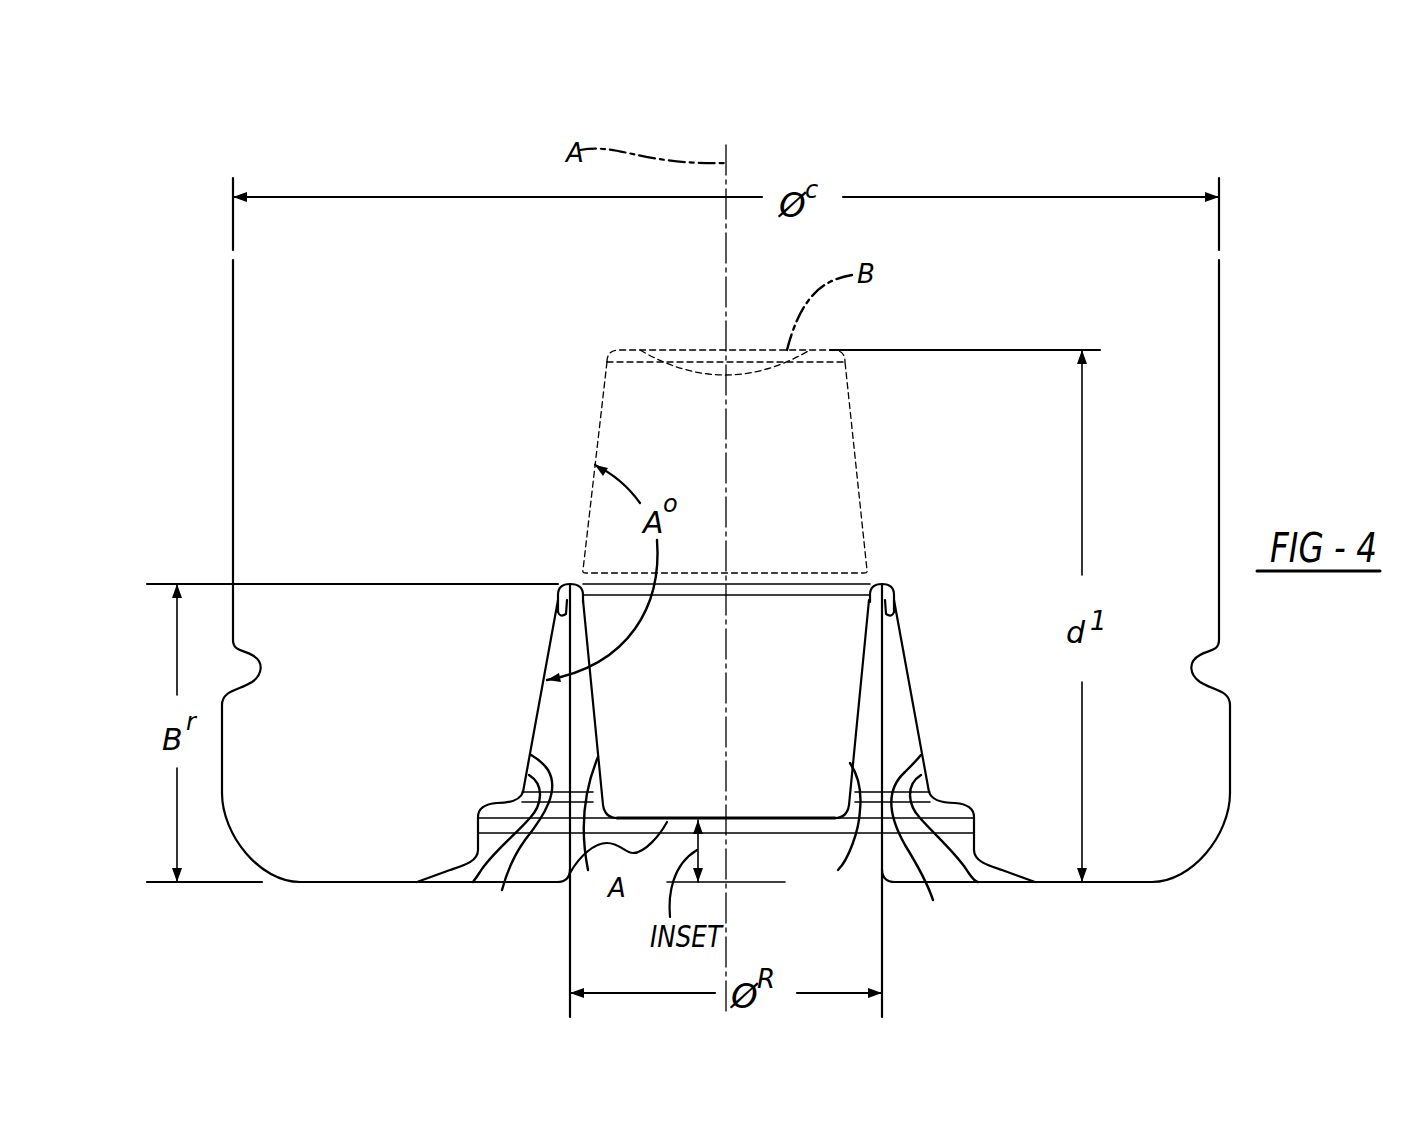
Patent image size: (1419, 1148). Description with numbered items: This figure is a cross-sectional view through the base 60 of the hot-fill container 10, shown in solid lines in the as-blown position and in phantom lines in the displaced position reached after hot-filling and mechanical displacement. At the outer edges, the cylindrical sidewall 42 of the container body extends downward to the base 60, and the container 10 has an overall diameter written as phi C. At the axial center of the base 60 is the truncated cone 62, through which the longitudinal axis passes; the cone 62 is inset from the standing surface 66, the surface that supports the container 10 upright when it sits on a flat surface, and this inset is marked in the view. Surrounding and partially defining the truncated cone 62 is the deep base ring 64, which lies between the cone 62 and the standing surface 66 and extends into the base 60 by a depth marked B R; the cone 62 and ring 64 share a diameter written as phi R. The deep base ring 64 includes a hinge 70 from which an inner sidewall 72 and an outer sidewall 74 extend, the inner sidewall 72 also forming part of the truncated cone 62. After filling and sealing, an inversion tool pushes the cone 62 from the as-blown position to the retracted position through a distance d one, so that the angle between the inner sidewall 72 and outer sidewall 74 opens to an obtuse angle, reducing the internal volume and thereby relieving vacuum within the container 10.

The container 10 is at (676, 448).
The cylindrical sidewall 42 is at (233, 445).
The base 60 is at (397, 905).
The truncated cone 62 is at (785, 822).
The deep base ring 64 is at (473, 882).
The standing surface 66 is at (338, 882).
The hinge 70 is at (556, 611).
The inner sidewall 72 is at (588, 870).
The outer sidewall 74 is at (502, 890).